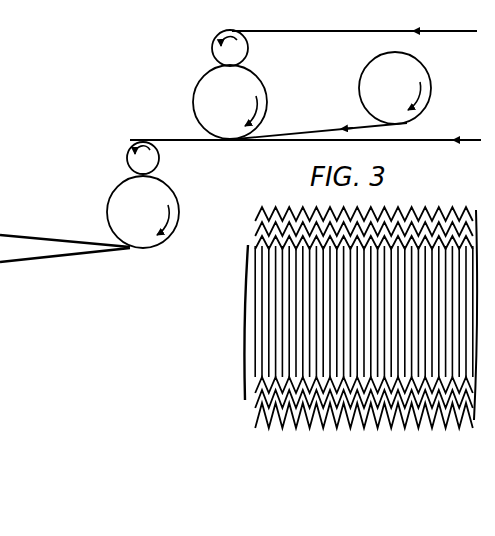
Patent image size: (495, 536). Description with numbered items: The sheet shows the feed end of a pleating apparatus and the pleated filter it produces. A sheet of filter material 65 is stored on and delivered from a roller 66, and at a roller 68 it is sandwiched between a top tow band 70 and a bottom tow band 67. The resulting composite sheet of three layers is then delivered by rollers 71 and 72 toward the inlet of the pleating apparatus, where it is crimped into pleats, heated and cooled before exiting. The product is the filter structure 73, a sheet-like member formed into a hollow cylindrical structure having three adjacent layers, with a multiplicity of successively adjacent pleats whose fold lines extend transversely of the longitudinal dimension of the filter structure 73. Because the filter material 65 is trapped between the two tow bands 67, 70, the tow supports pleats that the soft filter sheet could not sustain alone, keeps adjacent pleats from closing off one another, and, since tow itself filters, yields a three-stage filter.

In FIG. 2, the sheet of filter material 65 is at (312, 129).
In FIG. 3, the sheet of filter material 65 is at (258, 237).
In FIG. 2, the roller 66 is at (424, 66).
In FIG. 2, the bottom tow band 67 is at (418, 142).
In FIG. 3, the bottom tow band 67 is at (258, 254).
In FIG. 2, the roller 68 is at (203, 88).
In FIG. 2, the top tow band 70 is at (331, 33).
In FIG. 3, the top tow band 70 is at (260, 209).
In FIG. 2, the roller 71 is at (156, 157).
In FIG. 2, the roller 72 is at (167, 200).
In FIG. 3, the filter structure 73 is at (313, 317).